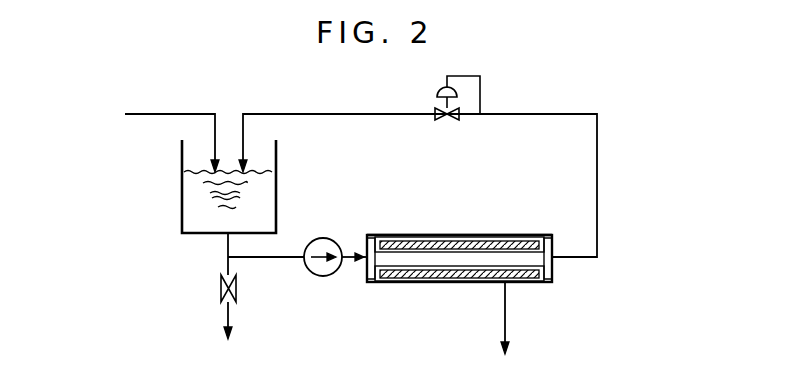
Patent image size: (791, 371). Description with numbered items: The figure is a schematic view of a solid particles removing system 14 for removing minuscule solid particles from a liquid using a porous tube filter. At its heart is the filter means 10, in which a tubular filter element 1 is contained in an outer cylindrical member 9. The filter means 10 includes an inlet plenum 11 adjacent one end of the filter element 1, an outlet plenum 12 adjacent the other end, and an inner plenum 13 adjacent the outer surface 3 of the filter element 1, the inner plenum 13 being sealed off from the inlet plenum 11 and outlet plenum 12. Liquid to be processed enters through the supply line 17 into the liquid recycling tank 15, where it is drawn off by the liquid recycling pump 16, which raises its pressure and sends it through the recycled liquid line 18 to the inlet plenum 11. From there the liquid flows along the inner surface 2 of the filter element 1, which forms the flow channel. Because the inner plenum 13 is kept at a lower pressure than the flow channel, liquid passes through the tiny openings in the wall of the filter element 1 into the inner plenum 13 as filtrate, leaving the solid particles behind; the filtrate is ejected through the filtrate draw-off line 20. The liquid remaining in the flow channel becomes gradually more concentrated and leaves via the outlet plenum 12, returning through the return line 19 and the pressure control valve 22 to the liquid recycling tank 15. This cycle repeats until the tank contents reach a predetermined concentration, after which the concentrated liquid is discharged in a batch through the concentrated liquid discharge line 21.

The filter element 1 is at (413, 284).
The inner surface 2 is at (461, 267).
The outer surface 3 is at (400, 284).
The outer cylindrical member 9 is at (433, 236).
The filter means 10 is at (481, 231).
The inlet plenum 11 is at (377, 236).
The outlet plenum 12 is at (549, 236).
The inner plenum 13 is at (510, 241).
The solid particles removing system 14 is at (313, 308).
The liquid recycling tank 15 is at (183, 183).
The liquid recycling pump 16 is at (329, 238).
The supply line 17 is at (174, 114).
The recycled liquid line 18 is at (267, 258).
The return line 19 is at (555, 114).
The filtrate draw-off line 20 is at (506, 310).
The concentrated liquid discharge line 21 is at (222, 302).
The pressure control valve 22 is at (437, 95).